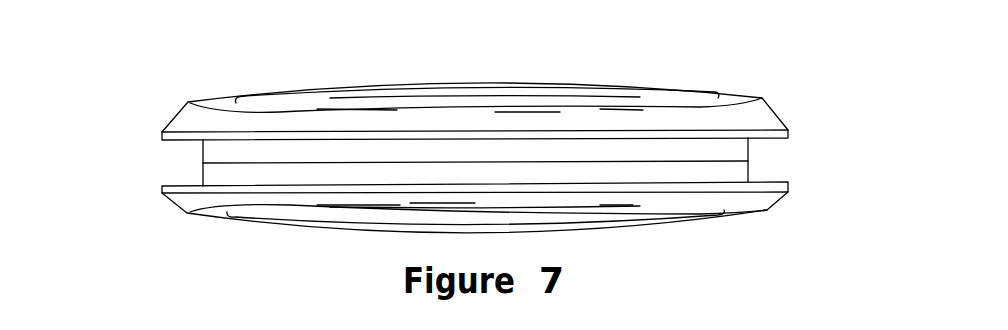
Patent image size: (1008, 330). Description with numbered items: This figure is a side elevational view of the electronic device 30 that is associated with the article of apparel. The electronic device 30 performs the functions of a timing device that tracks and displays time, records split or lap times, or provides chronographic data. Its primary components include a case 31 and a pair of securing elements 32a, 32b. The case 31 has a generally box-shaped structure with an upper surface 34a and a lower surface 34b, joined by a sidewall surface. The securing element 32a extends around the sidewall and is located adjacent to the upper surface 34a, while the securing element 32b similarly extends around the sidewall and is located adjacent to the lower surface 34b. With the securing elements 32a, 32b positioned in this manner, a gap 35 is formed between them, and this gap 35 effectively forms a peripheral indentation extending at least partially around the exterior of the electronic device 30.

The electronic device 30 is at (478, 152).
The case 31 is at (475, 82).
The securing element 32a is at (475, 83).
The securing element 32b is at (475, 235).
The upper surface 34a is at (605, 85).
The lower surface 34b is at (343, 235).
The gap 35 is at (188, 163).